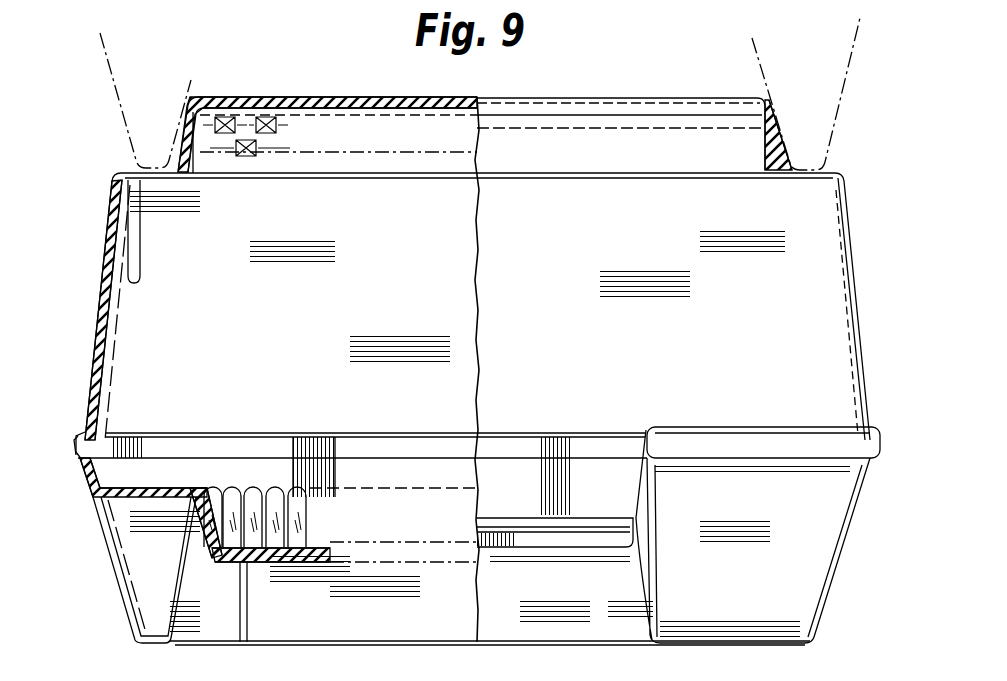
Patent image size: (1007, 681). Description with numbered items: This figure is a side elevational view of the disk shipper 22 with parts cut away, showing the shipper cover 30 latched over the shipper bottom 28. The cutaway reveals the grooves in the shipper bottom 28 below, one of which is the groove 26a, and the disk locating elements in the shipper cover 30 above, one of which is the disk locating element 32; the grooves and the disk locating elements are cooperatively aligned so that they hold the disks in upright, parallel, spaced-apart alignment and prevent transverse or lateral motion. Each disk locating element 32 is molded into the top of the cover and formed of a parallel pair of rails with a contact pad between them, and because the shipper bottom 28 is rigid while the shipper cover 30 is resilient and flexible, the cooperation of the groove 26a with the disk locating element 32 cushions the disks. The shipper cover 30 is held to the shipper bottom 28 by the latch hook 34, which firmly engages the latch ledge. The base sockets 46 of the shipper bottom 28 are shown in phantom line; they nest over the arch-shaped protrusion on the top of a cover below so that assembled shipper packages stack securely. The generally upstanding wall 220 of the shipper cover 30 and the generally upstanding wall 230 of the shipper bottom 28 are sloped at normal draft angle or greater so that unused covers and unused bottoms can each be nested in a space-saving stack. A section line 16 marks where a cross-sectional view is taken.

The section line 16 is at (211, 673).
The disk shipper 22 is at (74, 442).
The groove 26a is at (213, 558).
The shipper bottom 28 is at (118, 593).
The shipper cover 30 is at (100, 215).
The disk locating element 32 is at (194, 108).
The latch hook 34 is at (560, 528).
The base socket 46 is at (133, 127).
The upstanding wall 220 is at (100, 343).
The upstanding wall 230 is at (110, 560).